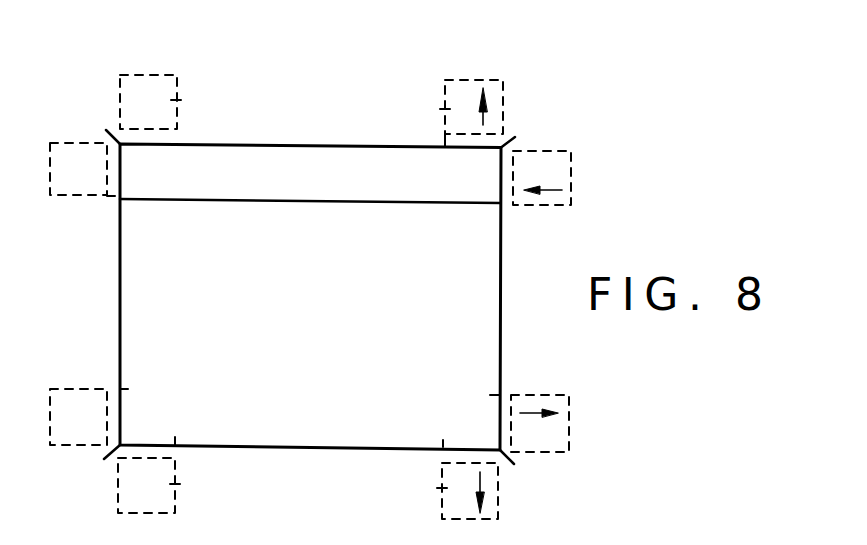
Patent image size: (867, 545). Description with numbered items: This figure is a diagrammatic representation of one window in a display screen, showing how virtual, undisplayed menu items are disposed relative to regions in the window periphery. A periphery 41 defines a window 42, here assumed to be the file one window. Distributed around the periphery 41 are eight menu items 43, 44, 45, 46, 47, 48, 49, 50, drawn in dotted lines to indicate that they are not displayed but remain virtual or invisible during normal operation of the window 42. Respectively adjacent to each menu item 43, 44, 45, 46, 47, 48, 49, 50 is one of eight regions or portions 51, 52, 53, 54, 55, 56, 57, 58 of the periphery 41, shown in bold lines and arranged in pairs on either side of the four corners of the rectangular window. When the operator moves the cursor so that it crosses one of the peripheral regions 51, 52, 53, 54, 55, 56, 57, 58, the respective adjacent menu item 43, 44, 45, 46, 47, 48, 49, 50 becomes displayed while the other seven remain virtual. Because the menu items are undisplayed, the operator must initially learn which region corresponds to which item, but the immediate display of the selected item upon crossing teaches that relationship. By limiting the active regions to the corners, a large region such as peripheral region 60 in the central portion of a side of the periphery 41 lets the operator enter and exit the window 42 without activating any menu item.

The periphery 41 is at (315, 145).
The window 42 is at (490, 318).
The menu item 43 is at (440, 109).
The menu item 44 is at (571, 203).
The menu item 45 is at (569, 410).
The menu item 46 is at (437, 488).
The menu item 47 is at (180, 484).
The menu item 48 is at (85, 385).
The menu item 49 is at (83, 185).
The menu item 50 is at (181, 100).
The peripheral region 51 is at (477, 149).
The peripheral region 52 is at (500, 180).
The peripheral region 53 is at (498, 415).
The peripheral region 54 is at (470, 448).
The peripheral region 55 is at (143, 445).
The peripheral region 56 is at (120, 408).
The peripheral region 57 is at (120, 177).
The peripheral region 58 is at (147, 144).
The peripheral region 60 is at (332, 448).